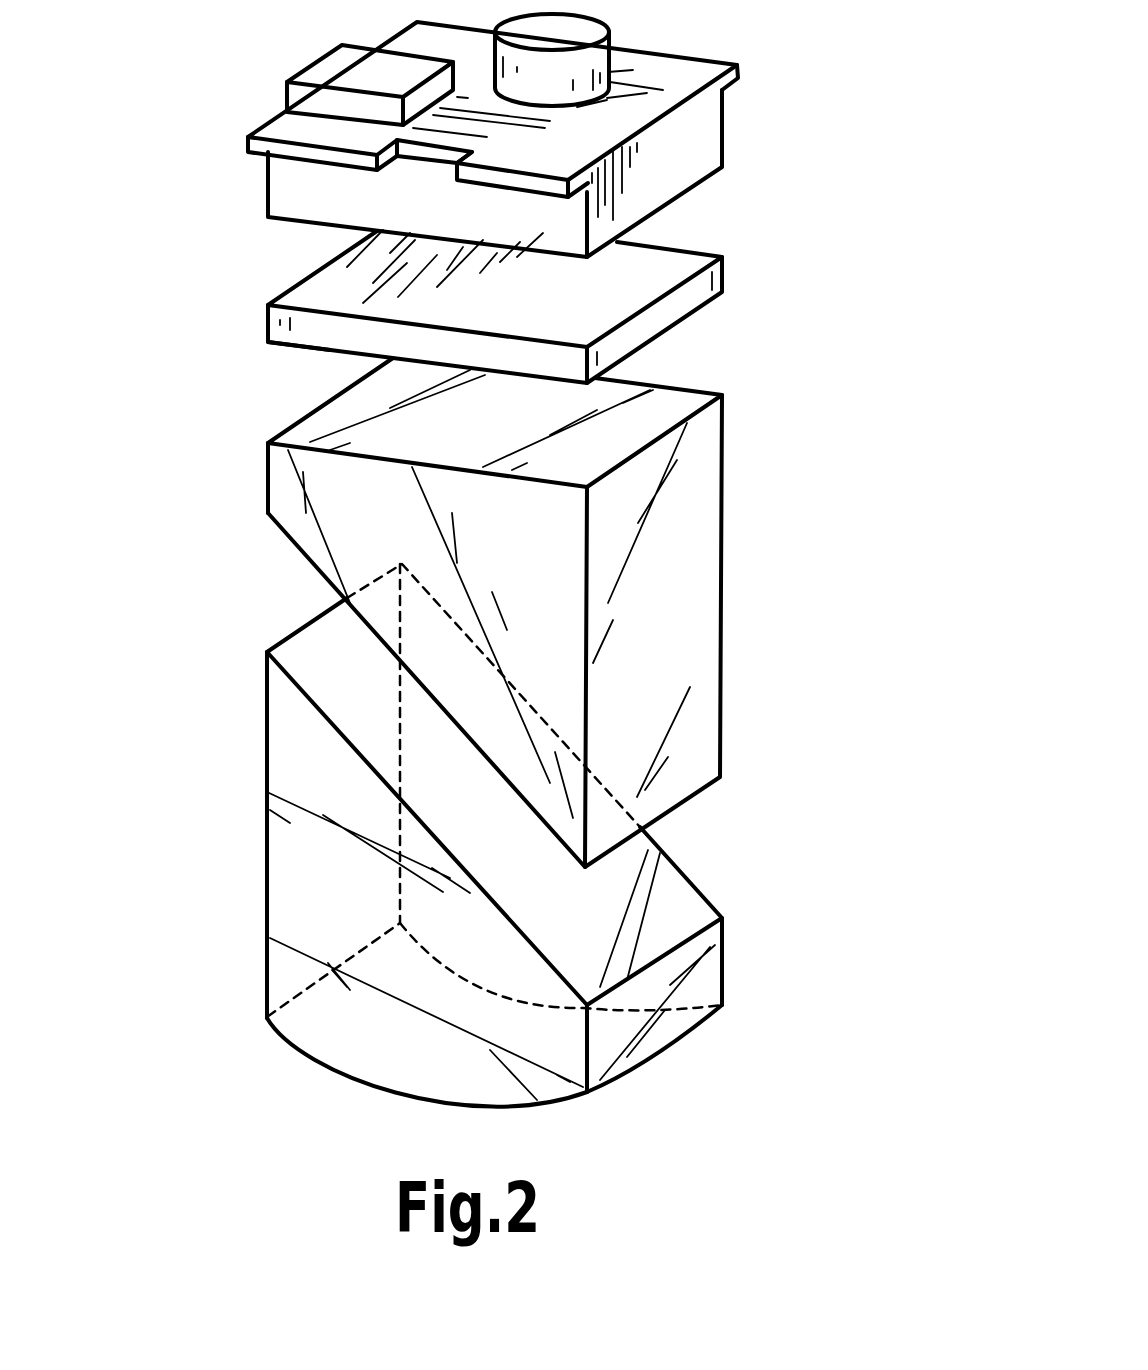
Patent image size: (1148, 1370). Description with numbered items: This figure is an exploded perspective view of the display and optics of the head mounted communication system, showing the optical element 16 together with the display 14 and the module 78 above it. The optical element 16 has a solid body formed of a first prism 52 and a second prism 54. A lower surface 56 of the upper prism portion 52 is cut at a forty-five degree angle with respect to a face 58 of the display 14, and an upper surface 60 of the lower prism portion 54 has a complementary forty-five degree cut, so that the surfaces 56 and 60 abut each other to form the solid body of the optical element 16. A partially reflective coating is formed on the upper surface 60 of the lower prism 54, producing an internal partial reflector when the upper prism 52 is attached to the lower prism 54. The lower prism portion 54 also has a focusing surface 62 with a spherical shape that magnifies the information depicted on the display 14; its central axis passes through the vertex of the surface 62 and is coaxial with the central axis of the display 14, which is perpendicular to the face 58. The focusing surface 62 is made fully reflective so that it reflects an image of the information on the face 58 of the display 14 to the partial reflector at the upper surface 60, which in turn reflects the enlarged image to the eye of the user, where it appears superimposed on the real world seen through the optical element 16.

The printed circuit board / electronics module 78 is at (707, 138).
The display 14 is at (277, 325).
The face of the display 58 is at (300, 345).
The first prism 52 is at (700, 708).
The lower surface of the upper prism portion 56 is at (310, 556).
The upper surface of the lower prism portion 60 is at (372, 720).
The second prism 54 is at (318, 912).
The focusing surface 62 is at (406, 1102).
The optical element 16 is at (800, 822).